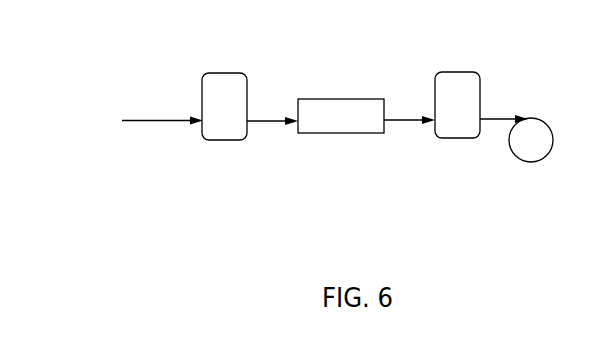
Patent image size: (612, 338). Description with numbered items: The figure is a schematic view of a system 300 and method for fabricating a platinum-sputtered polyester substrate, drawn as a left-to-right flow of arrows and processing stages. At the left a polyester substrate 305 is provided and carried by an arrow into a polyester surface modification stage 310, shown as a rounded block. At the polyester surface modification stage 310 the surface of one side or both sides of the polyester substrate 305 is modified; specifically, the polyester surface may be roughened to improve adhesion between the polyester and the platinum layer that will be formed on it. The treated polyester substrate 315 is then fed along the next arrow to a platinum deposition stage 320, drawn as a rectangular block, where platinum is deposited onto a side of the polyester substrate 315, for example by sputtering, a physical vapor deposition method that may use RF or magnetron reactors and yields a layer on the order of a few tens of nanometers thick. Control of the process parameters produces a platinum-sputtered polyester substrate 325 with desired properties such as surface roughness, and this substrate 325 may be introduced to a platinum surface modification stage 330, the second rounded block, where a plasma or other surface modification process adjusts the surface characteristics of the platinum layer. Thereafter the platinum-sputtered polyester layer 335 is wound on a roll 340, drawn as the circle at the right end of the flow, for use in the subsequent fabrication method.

The system 300 is at (103, 216).
The polyester substrate 305 is at (151, 120).
The polyester surface modification stage 310 is at (220, 140).
The polyester substrate 315 is at (277, 120).
The platinum deposition stage 320 is at (340, 133).
The platinum-sputtered polyester substrate 325 is at (408, 118).
The platinum surface modification stage 330 is at (453, 138).
The platinum-sputtered polyester layer 335 is at (507, 118).
The roll 340 is at (532, 162).